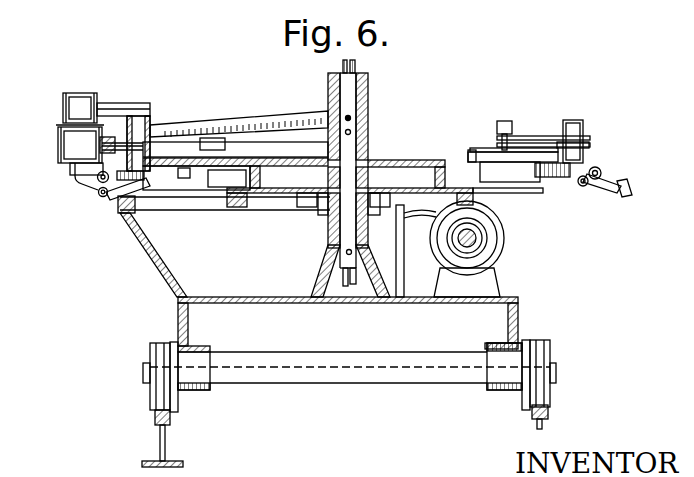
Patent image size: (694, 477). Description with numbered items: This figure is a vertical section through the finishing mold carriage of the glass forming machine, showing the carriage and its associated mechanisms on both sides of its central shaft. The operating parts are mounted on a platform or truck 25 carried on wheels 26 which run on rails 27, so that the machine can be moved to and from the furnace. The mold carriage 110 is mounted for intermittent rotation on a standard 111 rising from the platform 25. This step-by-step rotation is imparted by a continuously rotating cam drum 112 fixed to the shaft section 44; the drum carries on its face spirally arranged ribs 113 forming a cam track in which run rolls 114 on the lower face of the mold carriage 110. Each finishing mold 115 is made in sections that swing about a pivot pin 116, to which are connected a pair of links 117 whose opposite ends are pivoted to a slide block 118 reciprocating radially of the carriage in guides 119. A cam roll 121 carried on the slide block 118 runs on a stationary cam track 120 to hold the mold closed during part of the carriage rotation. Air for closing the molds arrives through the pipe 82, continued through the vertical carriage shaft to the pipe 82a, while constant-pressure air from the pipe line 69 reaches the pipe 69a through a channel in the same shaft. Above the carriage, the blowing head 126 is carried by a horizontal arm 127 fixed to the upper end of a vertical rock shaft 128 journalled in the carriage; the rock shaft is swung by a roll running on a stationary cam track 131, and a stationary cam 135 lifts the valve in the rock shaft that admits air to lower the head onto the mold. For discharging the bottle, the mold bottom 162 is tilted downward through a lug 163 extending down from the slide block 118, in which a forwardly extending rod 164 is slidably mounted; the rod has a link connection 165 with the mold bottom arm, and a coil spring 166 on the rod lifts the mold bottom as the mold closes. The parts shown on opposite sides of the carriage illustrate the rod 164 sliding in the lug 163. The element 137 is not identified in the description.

The platform or truck 25 is at (256, 284).
The wheels 26 is at (150, 356).
The rails 27 is at (155, 417).
The shaft section 44 is at (462, 243).
The pipe line 69 is at (355, 277).
The pipe 69a is at (357, 66).
The pipe 82 is at (344, 277).
The pipe 82a is at (343, 66).
The mold carriage 110 is at (275, 162).
The standard 111 is at (330, 228).
The cam drum 112 is at (497, 247).
The spirally arranged ribs 113 is at (505, 236).
The rolls 114 is at (237, 207).
The finishing mold 115 is at (58, 146).
The pivot pin 116 is at (589, 145).
The links 117 is at (547, 123).
The slide block 118 is at (478, 150).
The guides 119 is at (221, 157).
The stationary cam track 120 is at (235, 138).
The cam roll 121 is at (118, 133).
The blowing head 126 is at (78, 93).
The horizontal arm 127 is at (113, 103).
The vertical rock shaft 128 is at (150, 122).
The stationary cam track 131 is at (118, 206).
The stationary cam 135 is at (130, 216).
The right arm plate 137 is at (403, 170).
The mold bottom 162 is at (72, 168).
The lug 163 is at (146, 177).
The rod 164 is at (190, 173).
The link connection 165 is at (106, 197).
The coil spring 166 is at (98, 191).